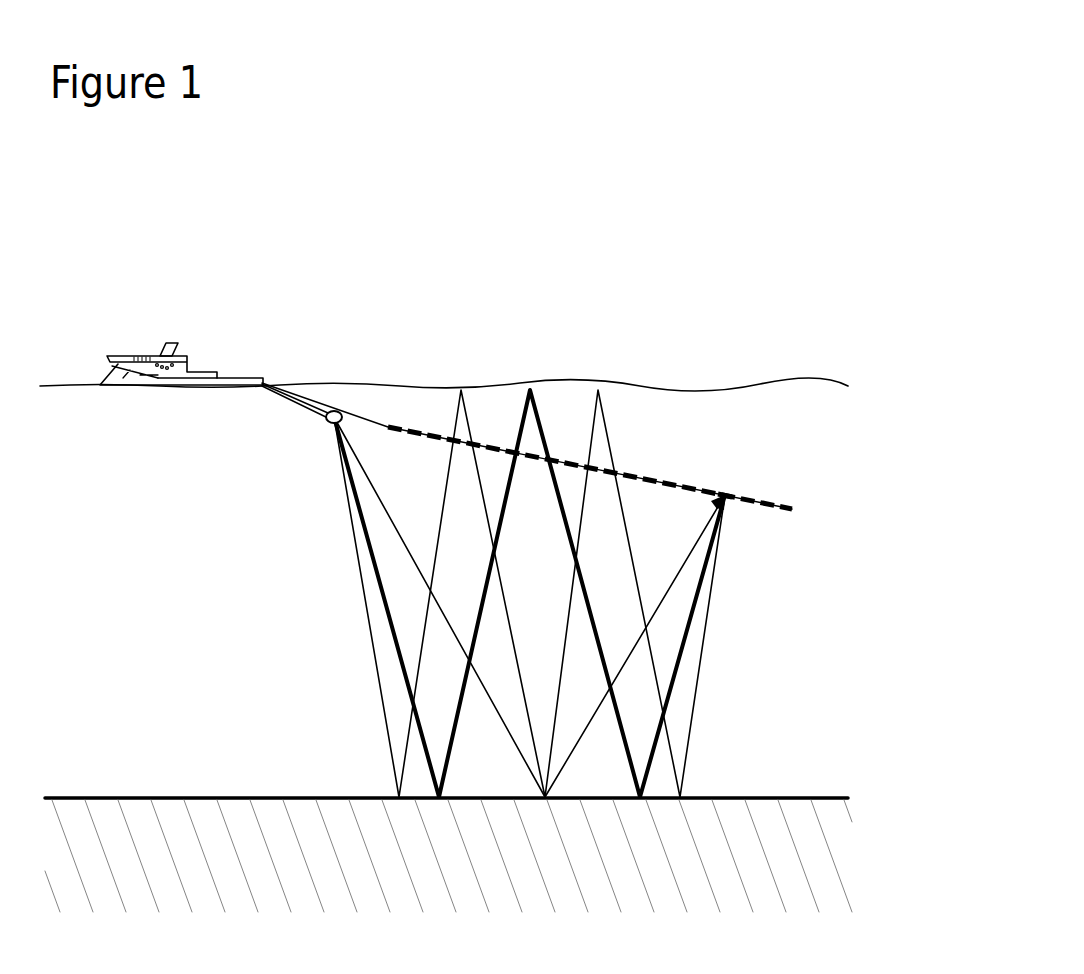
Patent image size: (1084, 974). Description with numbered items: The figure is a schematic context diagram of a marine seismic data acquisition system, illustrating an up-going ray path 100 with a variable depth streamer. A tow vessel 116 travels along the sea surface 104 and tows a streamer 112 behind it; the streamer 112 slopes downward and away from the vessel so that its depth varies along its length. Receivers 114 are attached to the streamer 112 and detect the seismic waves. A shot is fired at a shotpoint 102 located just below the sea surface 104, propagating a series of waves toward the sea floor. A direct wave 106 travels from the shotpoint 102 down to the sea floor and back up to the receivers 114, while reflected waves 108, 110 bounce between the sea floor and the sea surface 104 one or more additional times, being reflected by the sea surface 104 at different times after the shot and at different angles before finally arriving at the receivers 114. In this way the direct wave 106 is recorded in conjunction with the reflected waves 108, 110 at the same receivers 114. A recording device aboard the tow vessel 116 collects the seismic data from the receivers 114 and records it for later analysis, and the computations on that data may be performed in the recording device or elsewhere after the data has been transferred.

The up-going ray path 100 is at (645, 101).
The shotpoint 102 is at (326, 417).
The sea surface 104 is at (369, 386).
The direct wave 106 is at (364, 466).
The reflected wave 108 is at (356, 498).
The reflected wave 110 is at (353, 535).
The streamer 112 is at (715, 490).
The receivers 114 is at (727, 498).
The tow vessel 116 is at (188, 356).